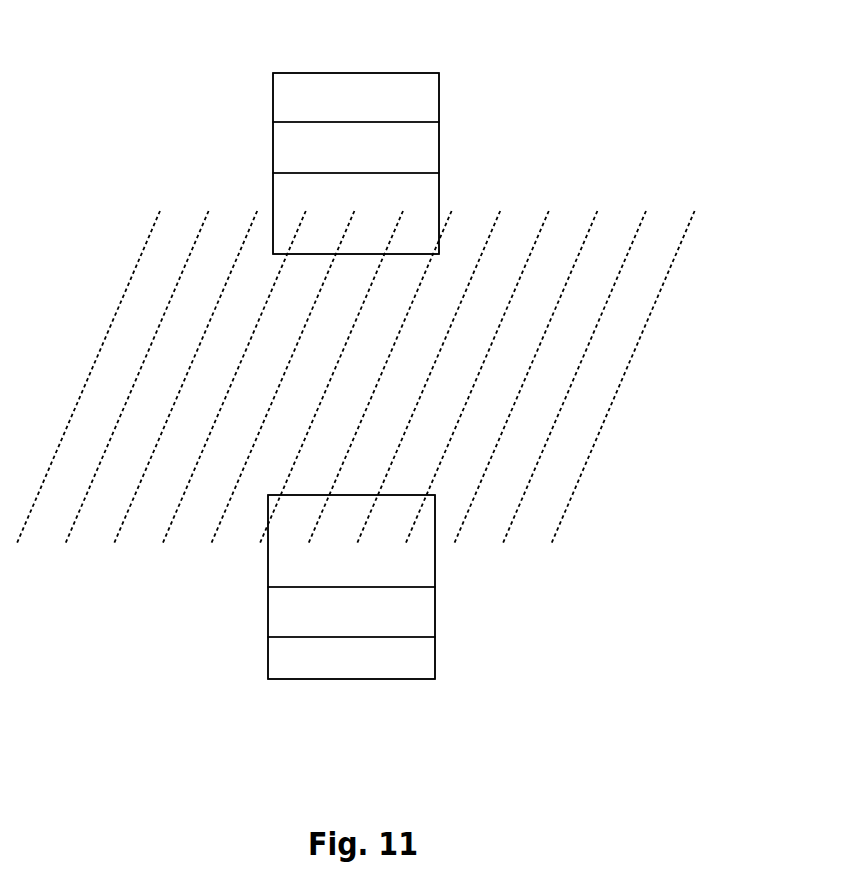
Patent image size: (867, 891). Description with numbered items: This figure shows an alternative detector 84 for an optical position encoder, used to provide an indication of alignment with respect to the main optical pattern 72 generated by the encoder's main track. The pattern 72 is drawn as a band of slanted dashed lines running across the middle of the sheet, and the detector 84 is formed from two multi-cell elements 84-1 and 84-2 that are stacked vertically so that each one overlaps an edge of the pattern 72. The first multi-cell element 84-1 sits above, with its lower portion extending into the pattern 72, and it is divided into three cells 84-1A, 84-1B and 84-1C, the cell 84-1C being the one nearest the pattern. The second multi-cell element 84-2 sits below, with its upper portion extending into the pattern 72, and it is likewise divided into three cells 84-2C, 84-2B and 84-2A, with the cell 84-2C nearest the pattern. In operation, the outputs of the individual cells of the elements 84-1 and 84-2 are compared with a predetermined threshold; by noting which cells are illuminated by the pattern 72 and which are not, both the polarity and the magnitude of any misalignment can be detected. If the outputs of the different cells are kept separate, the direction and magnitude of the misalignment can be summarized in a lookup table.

The main optical pattern 72 is at (384, 377).
The alternative detector 84 is at (537, 74).
The multi-cell element 84-1 is at (299, 163).
The cell 84-1A is at (356, 97).
The cell 84-1B is at (356, 147).
The cell 84-1C is at (356, 213).
The multi-cell element 84-2 is at (293, 587).
The cell 84-2A is at (351, 658).
The cell 84-2B is at (351, 612).
The cell 84-2C is at (351, 541).